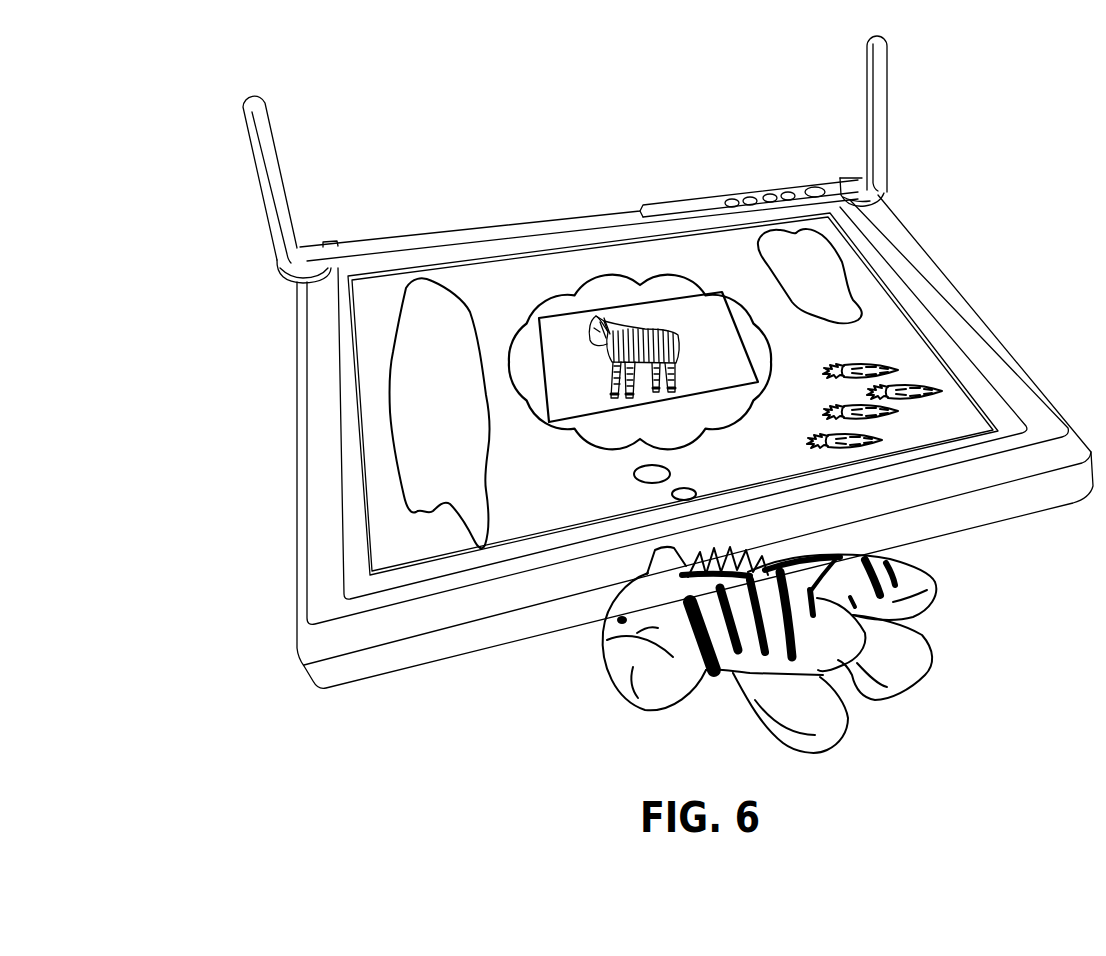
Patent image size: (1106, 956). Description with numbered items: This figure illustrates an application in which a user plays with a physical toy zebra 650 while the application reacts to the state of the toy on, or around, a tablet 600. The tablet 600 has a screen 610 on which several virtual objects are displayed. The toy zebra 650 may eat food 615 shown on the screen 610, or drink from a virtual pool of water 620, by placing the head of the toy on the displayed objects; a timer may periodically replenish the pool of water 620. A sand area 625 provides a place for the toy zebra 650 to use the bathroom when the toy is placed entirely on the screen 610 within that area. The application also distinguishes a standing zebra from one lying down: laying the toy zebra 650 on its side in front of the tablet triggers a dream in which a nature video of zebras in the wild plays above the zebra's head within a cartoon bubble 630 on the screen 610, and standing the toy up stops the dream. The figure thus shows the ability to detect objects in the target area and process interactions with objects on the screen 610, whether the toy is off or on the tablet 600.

The tablet 600 is at (297, 620).
The screen 610 is at (553, 267).
The food 615 is at (940, 396).
The virtual pool of water 620 is at (848, 258).
The sand area 625 is at (433, 440).
The cartoon bubble 630 is at (632, 283).
The toy zebra 650 is at (612, 703).